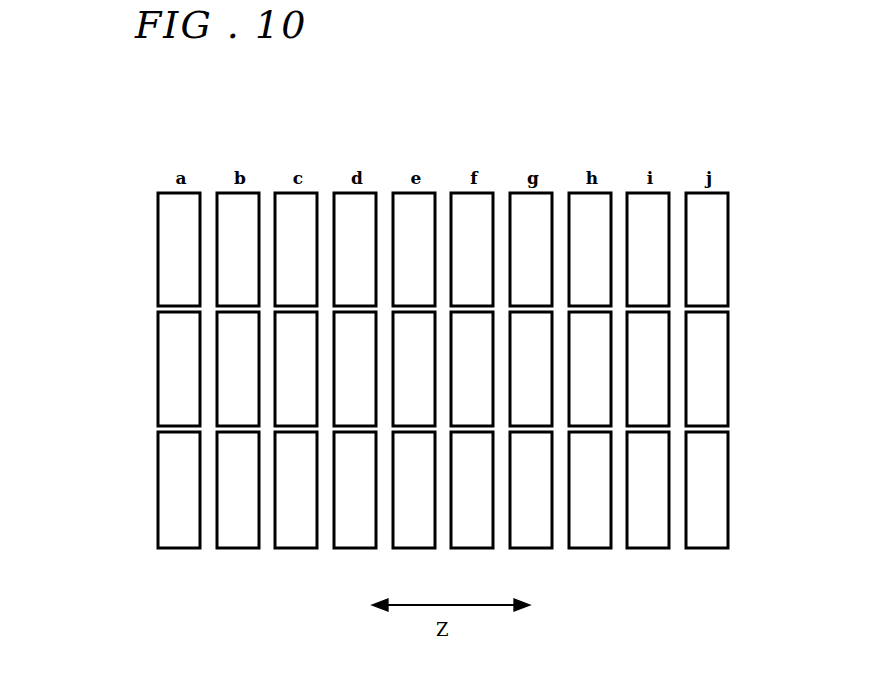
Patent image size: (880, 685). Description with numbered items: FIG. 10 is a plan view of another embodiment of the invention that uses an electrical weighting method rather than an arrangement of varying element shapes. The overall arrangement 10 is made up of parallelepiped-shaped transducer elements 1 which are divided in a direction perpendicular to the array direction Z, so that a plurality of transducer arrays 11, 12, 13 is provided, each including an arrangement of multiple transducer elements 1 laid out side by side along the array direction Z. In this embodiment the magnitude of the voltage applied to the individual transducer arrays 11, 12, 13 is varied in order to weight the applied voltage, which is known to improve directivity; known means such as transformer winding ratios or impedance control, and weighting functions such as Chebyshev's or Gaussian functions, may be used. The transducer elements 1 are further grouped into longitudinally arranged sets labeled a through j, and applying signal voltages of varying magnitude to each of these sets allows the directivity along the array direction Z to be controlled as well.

The transducer element 1 is at (705, 250).
The pixel array 10 is at (510, 138).
The transducer array 11 is at (138, 251).
The transducer array 12 is at (138, 363).
The transducer array 13 is at (137, 478).